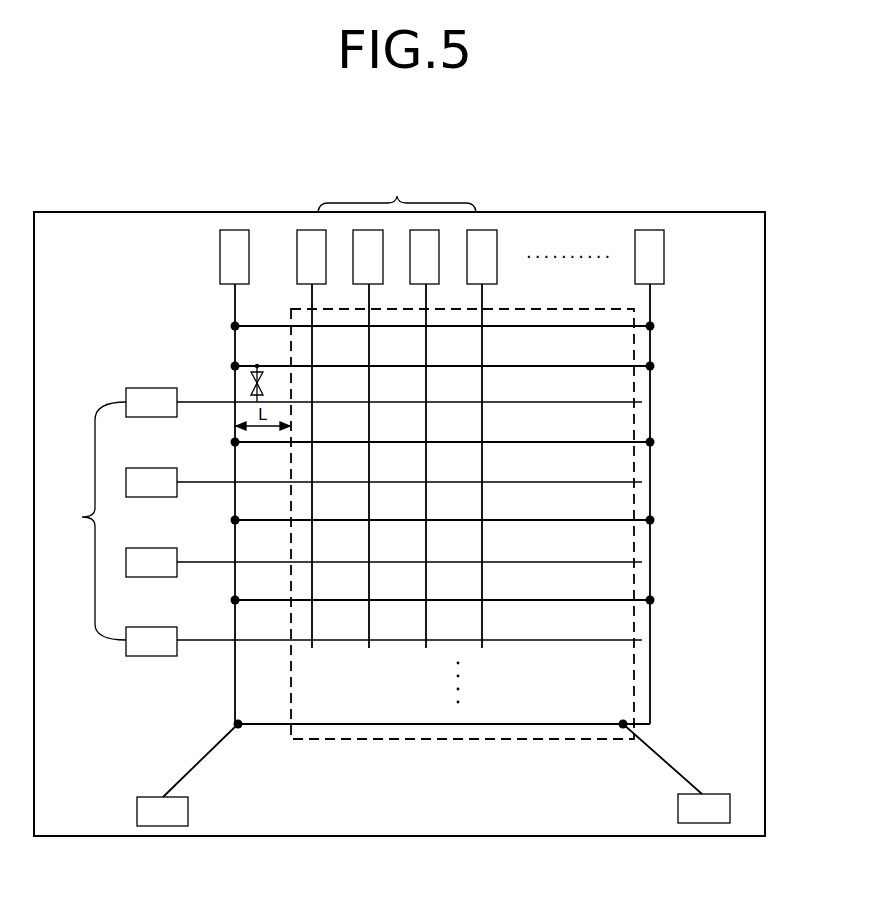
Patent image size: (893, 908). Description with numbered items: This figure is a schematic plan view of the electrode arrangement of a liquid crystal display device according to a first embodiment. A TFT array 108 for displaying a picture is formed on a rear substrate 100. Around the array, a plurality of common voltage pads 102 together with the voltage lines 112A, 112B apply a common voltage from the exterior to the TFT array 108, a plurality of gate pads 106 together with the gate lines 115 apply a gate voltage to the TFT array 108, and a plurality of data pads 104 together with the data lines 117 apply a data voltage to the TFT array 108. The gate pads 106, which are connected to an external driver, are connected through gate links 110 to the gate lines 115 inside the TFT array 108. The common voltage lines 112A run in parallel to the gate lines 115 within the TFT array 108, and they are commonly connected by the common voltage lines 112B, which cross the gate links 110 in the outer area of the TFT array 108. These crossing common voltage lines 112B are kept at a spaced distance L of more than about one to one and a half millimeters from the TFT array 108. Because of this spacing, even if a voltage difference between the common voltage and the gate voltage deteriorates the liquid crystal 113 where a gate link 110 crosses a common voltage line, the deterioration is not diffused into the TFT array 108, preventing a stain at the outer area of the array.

The rear substrate 100 is at (765, 216).
The common voltage pads 102 is at (235, 230).
The data pads 104 is at (397, 226).
The gate pads 106 is at (130, 506).
The TFT array 108 is at (634, 464).
The gate links 110 is at (198, 380).
The common voltage lines 112A is at (580, 325).
The common voltage lines 112B is at (234, 310).
The liquid crystal 113 is at (266, 350).
The gate lines 115 is at (612, 400).
The data lines 117 is at (312, 374).